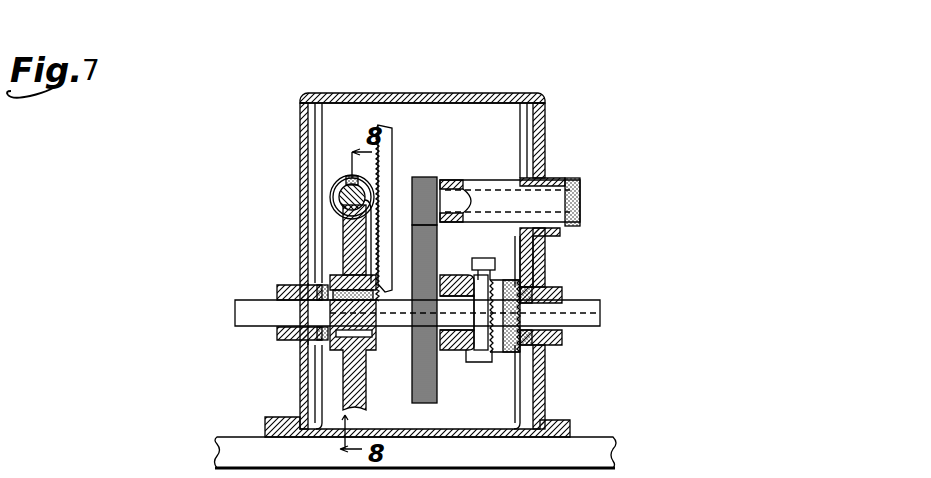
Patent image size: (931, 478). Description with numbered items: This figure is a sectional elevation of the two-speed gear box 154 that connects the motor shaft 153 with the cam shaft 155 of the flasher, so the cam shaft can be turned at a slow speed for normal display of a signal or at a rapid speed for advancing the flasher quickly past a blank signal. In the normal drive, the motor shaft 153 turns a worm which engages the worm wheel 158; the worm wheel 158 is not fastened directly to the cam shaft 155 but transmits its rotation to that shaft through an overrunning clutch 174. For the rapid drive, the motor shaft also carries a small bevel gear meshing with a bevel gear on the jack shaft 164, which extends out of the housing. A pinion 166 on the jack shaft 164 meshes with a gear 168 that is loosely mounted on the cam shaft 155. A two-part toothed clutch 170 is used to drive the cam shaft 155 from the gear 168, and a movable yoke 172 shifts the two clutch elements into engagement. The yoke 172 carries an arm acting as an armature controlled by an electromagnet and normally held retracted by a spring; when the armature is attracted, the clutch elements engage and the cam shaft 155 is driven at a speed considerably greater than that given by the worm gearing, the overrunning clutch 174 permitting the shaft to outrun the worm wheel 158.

The motor shaft 153 is at (350, 176).
The two-speed gear box 154 is at (497, 96).
The cam shaft 155 is at (236, 315).
The worm wheel 158 is at (343, 242).
The jack shaft 164 is at (455, 195).
The pinion 166 is at (432, 178).
The gear 168 is at (437, 255).
The two-part toothed clutch 170 is at (493, 365).
The movable yoke 172 is at (466, 365).
The overrunning clutch 174 is at (362, 347).